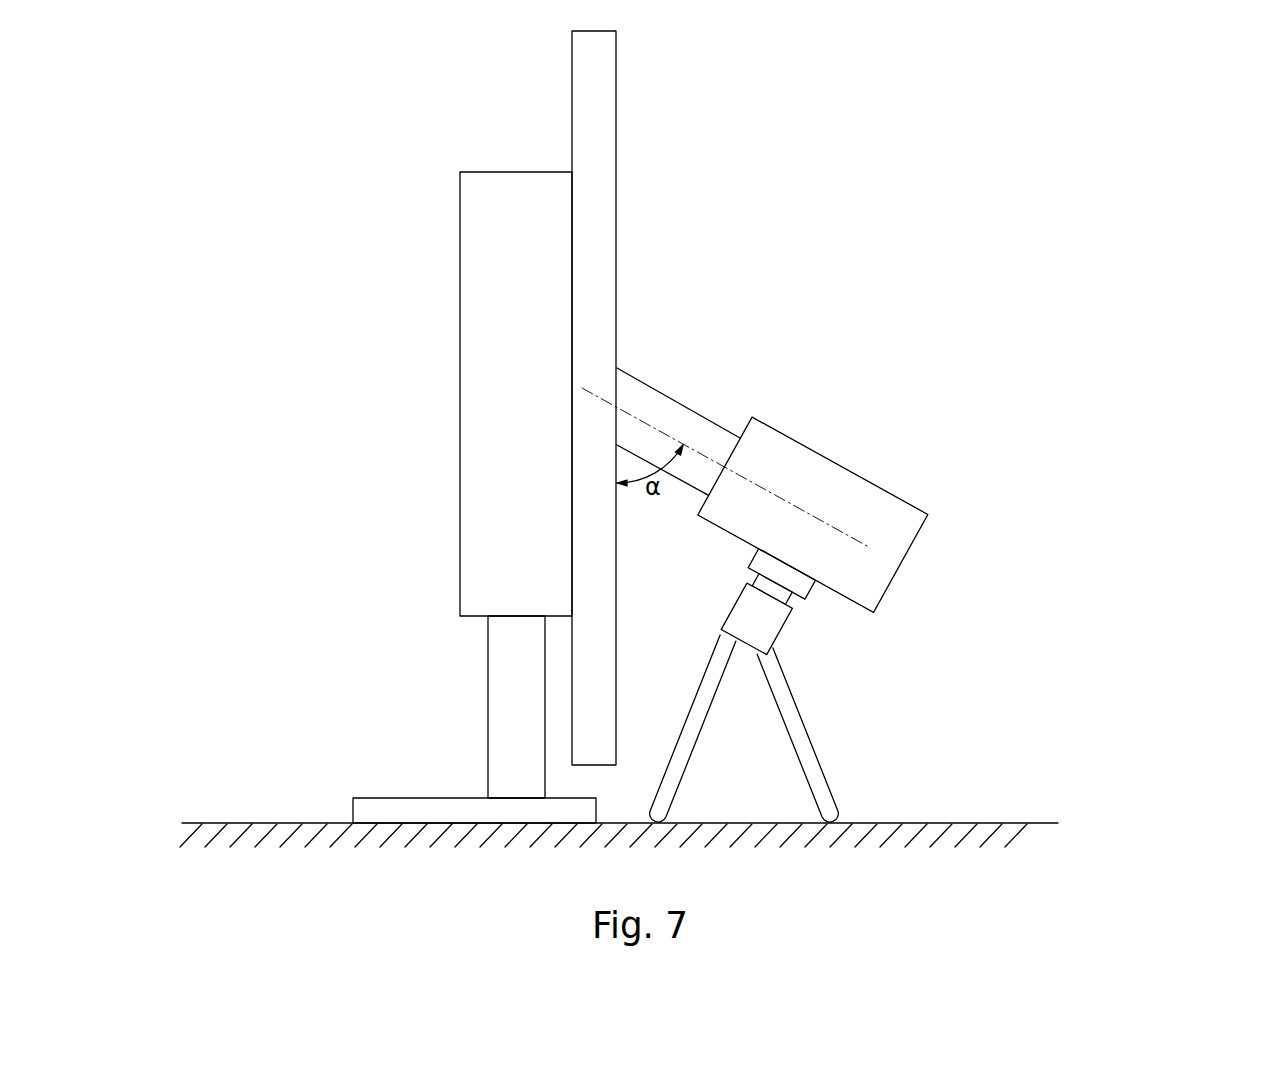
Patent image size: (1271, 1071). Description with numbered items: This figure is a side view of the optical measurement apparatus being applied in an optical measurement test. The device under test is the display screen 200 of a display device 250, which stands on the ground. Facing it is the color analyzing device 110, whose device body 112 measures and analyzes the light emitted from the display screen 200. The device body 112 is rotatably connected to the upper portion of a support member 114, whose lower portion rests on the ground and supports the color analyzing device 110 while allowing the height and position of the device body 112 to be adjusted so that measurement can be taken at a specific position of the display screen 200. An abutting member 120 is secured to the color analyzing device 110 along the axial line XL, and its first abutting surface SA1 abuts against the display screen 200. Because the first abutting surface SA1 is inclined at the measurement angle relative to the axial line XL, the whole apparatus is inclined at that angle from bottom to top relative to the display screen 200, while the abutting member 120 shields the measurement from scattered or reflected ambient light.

The color analyzing device 110 is at (837, 619).
The device body 112 is at (826, 521).
The support member 114 is at (783, 684).
The abutting member 120 is at (718, 433).
The display screen 200 is at (532, 427).
The display device 250 is at (603, 233).
The first abutting surface SA1 is at (617, 371).
The axial line XL is at (667, 433).